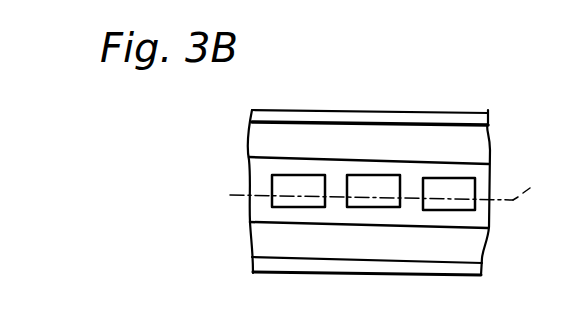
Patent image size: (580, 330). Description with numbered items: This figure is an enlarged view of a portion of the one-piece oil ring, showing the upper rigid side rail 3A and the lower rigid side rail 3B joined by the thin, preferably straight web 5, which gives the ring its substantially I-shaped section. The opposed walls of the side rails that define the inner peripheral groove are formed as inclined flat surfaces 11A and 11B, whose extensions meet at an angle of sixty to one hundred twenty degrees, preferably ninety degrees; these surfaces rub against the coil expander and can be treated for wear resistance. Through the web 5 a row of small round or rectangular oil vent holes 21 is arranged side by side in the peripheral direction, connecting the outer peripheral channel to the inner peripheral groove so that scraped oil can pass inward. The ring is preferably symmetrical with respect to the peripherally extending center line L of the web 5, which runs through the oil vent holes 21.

The upper rigid side rail 3A is at (304, 114).
The inclined flat surface 11A is at (362, 126).
The oil vent holes 21 is at (388, 176).
The web 5 is at (462, 167).
The center line L is at (390, 182).
The inclined flat surface 11B is at (310, 253).
The lower rigid side rail 3B is at (392, 268).